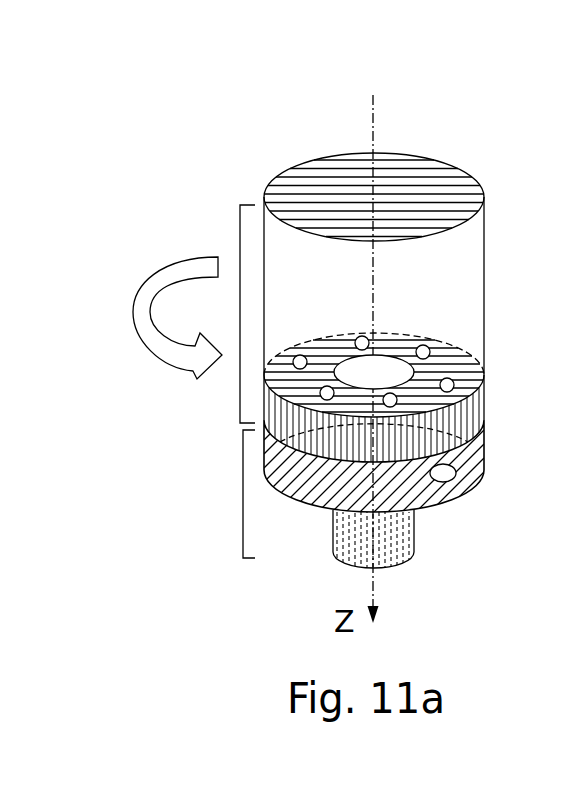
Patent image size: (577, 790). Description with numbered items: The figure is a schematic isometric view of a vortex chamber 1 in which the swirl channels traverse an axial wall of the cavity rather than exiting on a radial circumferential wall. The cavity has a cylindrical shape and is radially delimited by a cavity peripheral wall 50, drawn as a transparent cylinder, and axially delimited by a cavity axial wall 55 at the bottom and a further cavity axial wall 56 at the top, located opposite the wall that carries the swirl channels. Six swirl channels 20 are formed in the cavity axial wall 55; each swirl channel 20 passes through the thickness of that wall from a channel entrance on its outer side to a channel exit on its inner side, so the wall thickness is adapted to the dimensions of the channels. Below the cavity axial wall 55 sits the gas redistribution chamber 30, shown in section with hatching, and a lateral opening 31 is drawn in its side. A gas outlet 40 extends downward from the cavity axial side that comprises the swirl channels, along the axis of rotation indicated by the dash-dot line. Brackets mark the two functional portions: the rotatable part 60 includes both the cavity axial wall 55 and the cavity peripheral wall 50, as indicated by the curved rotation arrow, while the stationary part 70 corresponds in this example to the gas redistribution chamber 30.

The vortex chamber 1 is at (436, 99).
The swirl channel 20 is at (328, 386).
The gas redistribution chamber 30 is at (478, 462).
The lateral opening 31 is at (456, 478).
The gas outlet 40 is at (406, 556).
The cavity peripheral wall 50 is at (484, 296).
The cavity axial wall 55 is at (468, 410).
The further cavity axial wall 56 is at (442, 187).
The rotatable part 60 is at (240, 315).
The stationary part 70 is at (243, 493).